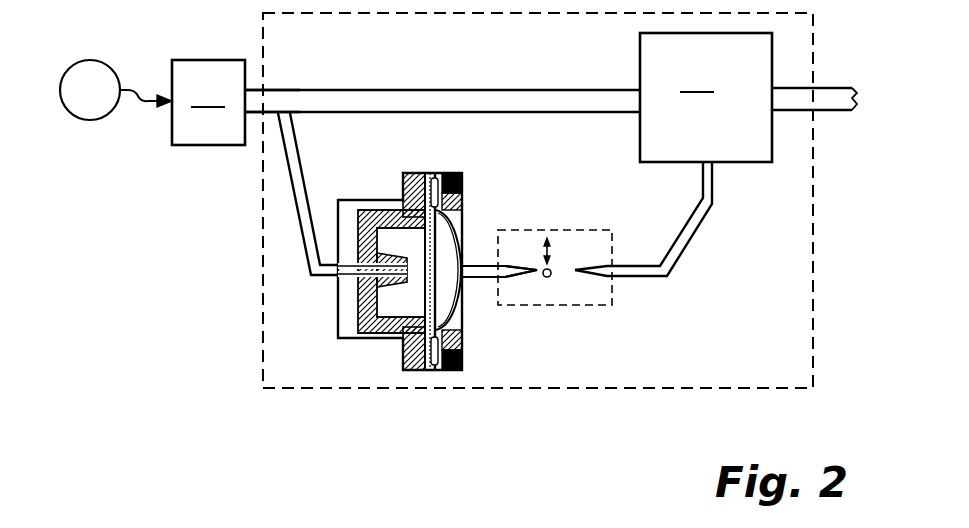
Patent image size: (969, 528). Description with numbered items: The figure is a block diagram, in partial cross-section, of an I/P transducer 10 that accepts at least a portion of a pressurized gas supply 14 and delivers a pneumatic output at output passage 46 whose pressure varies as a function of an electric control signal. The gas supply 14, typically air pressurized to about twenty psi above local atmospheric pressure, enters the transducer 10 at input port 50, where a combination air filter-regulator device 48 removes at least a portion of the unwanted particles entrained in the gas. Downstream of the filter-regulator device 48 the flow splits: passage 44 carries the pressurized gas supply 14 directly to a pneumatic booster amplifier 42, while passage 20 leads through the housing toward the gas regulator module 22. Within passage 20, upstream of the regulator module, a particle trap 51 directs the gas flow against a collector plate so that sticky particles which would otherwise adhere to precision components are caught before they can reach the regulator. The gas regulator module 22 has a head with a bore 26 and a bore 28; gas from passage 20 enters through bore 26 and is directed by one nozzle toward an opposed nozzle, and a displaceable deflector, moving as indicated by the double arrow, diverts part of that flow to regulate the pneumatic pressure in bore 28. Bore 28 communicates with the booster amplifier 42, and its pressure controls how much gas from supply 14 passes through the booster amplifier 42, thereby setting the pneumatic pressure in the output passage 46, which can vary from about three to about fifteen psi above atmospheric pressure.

The I/P transducer 10 is at (705, 390).
The pressurized gas supply 14 is at (73, 61).
The passage 20 is at (295, 160).
The gas regulator module 22 is at (555, 228).
The bore 26 is at (508, 271).
The bore 28 is at (603, 272).
The pneumatic booster amplifier 42 is at (706, 97).
The passage 44 is at (485, 95).
The output passage 46 is at (790, 97).
The air filter-regulator device 48 is at (208, 102).
The input port 50 is at (270, 100).
The particle trap 51 is at (370, 350).